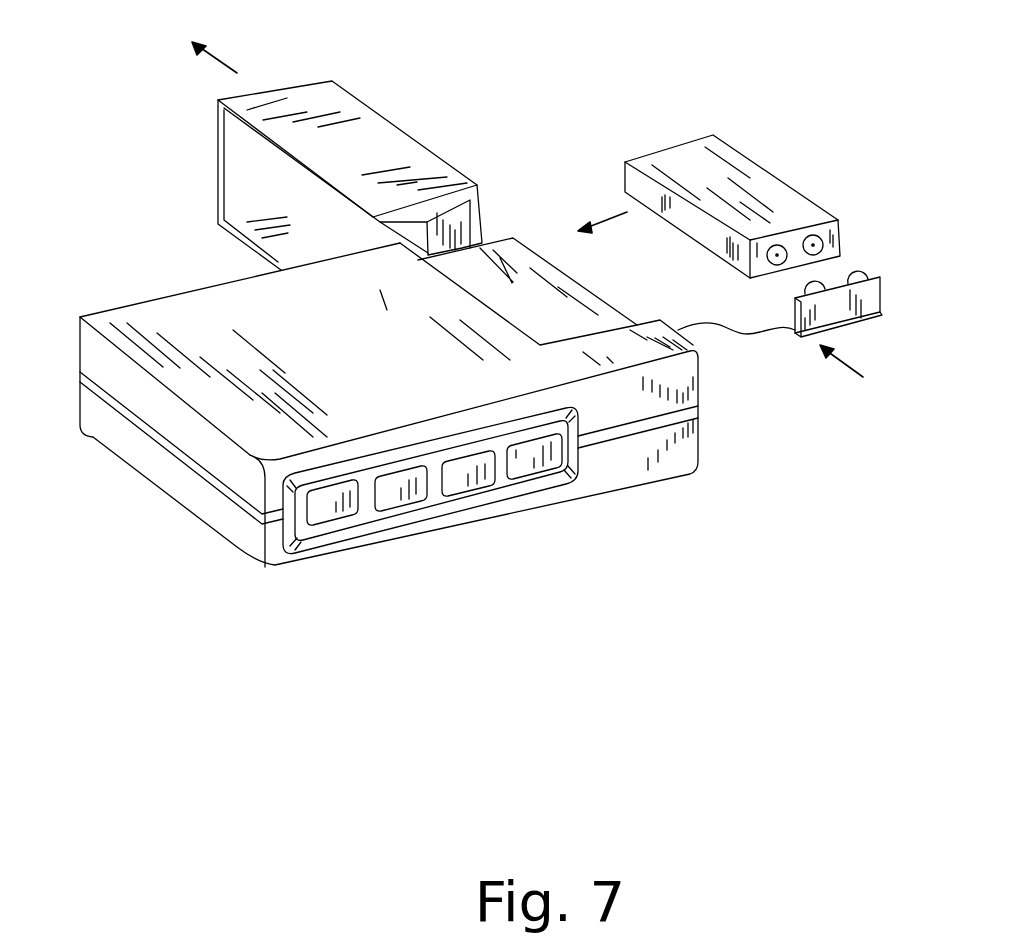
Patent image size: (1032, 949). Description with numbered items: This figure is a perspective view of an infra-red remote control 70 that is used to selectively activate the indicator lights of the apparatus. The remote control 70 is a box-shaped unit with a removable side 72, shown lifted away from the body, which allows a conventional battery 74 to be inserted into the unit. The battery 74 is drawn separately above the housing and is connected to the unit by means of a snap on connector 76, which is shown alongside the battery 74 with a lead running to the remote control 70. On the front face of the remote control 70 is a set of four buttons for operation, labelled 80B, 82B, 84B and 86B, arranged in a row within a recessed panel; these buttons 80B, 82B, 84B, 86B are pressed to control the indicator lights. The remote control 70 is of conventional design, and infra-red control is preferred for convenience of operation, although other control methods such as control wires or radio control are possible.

The infra-red remote control 70 is at (170, 295).
The removable side 72 is at (415, 138).
The conventional battery 74 is at (773, 175).
The snap on connector 76 is at (852, 310).
The button 80B is at (323, 519).
The button 82B is at (403, 508).
The button 84B is at (482, 491).
The button 86B is at (532, 473).